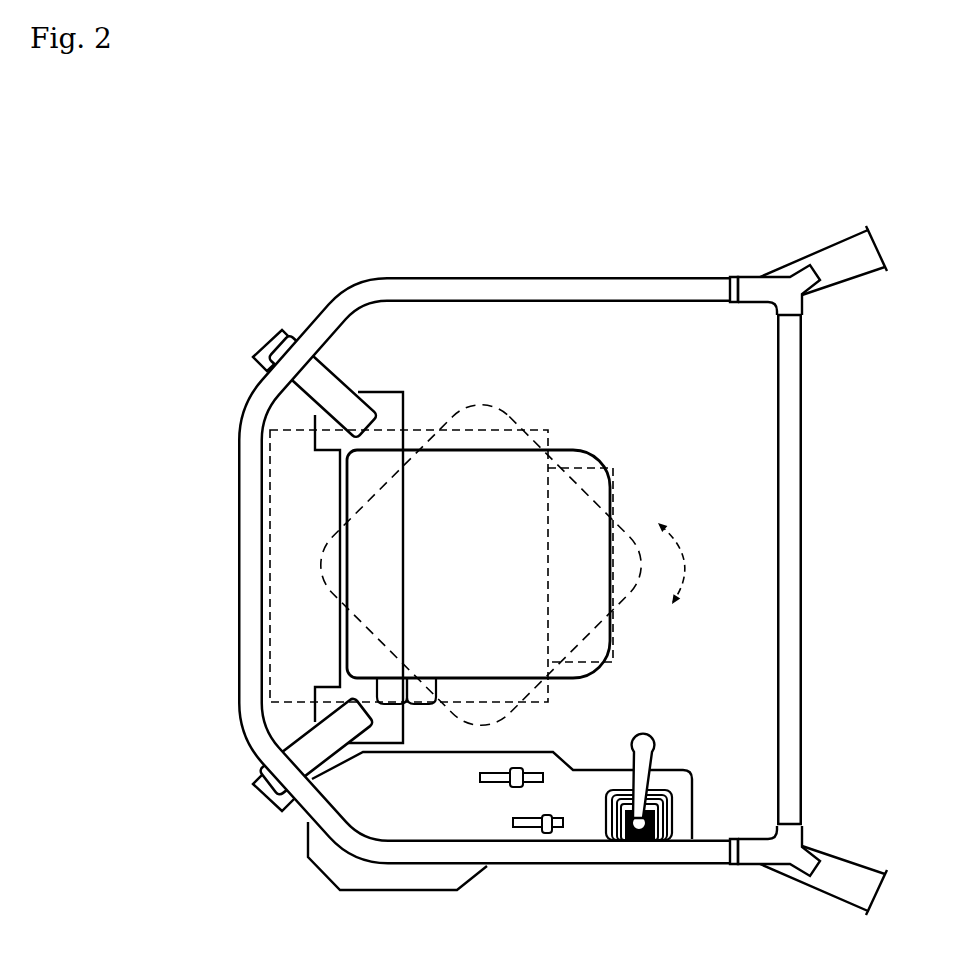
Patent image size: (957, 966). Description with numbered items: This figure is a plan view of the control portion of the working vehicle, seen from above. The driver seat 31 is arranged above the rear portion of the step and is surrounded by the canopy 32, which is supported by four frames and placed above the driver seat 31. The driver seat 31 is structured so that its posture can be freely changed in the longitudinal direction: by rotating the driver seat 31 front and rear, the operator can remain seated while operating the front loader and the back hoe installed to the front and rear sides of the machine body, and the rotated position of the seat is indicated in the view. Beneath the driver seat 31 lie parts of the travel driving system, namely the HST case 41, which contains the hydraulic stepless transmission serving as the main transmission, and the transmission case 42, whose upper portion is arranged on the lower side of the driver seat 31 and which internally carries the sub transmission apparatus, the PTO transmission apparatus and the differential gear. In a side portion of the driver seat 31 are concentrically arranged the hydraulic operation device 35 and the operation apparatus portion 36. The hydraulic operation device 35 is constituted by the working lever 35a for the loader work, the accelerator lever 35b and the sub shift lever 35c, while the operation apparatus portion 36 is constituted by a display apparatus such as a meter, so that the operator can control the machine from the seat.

The driver seat 31 is at (593, 677).
The canopy 32 is at (238, 553).
The hydraulic operation device 35 is at (532, 808).
The working lever 35a is at (657, 748).
The accelerator lever 35b is at (546, 833).
The sub shift lever 35c is at (512, 787).
The operation apparatus portion 36 is at (692, 797).
The HST case 41 is at (615, 497).
The transmission case 42 is at (532, 430).